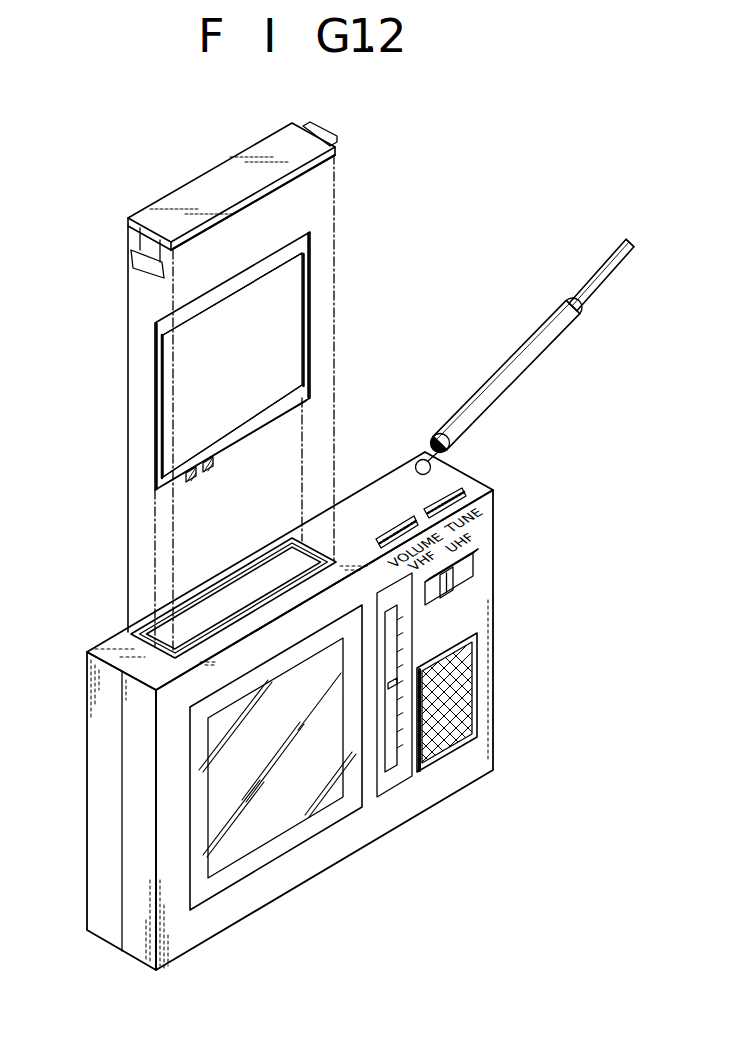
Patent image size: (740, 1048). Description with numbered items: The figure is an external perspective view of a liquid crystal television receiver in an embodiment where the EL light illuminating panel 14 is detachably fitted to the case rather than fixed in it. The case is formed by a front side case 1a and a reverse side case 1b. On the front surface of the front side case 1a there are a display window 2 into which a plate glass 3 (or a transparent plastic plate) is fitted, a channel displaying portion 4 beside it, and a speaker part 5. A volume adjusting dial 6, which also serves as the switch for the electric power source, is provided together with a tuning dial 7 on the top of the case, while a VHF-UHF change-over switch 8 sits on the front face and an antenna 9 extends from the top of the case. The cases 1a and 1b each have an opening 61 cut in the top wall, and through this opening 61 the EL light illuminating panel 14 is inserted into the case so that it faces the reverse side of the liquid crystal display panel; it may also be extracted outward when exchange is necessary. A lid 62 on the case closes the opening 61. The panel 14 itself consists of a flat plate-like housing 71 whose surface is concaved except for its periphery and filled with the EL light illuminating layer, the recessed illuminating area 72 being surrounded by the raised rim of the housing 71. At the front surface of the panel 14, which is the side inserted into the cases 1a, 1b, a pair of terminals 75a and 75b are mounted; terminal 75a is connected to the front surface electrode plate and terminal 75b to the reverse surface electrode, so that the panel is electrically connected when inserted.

The front side case 1a is at (243, 907).
The reverse side case 1b is at (90, 791).
The display window 2 is at (333, 803).
The plate glass 3 is at (291, 850).
The channel displaying portion 4 is at (400, 782).
The speaker part 5 is at (468, 689).
The volume adjusting dial 6 is at (392, 530).
The tuning knob 7 is at (451, 492).
The VHF-UHF change-over switch 8 is at (457, 577).
The antenna 9 is at (498, 374).
The EL light illuminating panel 14 is at (318, 265).
The opening 61 is at (255, 578).
The lid 62 is at (201, 181).
The housing 71 is at (273, 421).
The window opening 72 is at (283, 375).
The terminal 75a is at (212, 466).
The terminal 75b is at (191, 480).